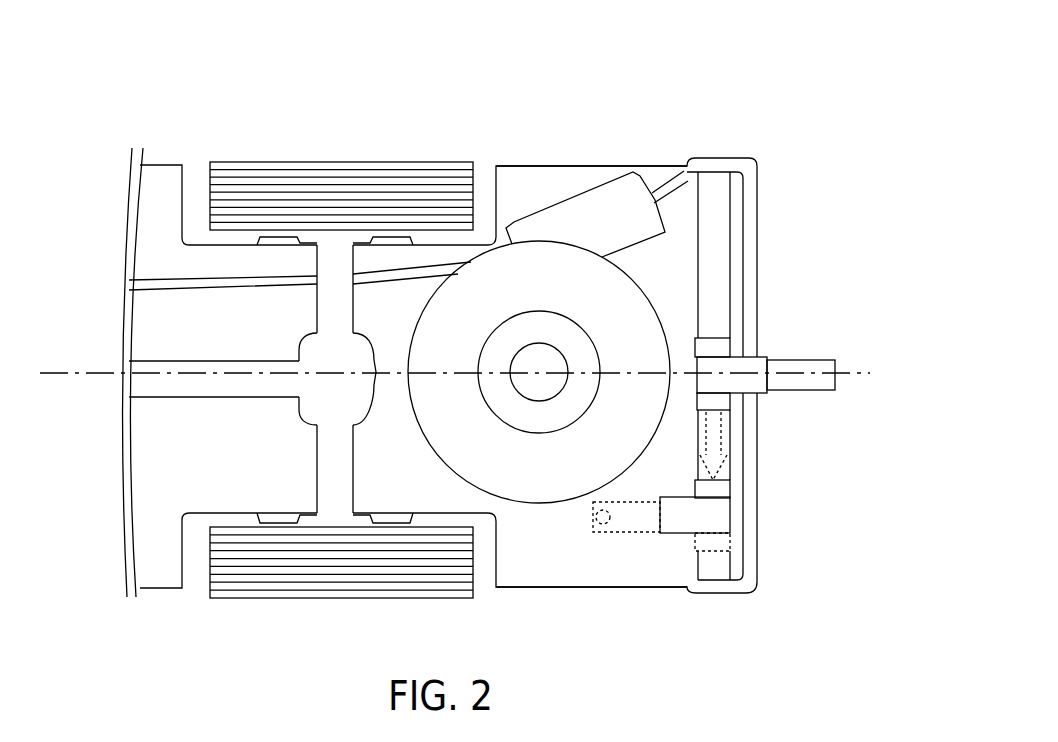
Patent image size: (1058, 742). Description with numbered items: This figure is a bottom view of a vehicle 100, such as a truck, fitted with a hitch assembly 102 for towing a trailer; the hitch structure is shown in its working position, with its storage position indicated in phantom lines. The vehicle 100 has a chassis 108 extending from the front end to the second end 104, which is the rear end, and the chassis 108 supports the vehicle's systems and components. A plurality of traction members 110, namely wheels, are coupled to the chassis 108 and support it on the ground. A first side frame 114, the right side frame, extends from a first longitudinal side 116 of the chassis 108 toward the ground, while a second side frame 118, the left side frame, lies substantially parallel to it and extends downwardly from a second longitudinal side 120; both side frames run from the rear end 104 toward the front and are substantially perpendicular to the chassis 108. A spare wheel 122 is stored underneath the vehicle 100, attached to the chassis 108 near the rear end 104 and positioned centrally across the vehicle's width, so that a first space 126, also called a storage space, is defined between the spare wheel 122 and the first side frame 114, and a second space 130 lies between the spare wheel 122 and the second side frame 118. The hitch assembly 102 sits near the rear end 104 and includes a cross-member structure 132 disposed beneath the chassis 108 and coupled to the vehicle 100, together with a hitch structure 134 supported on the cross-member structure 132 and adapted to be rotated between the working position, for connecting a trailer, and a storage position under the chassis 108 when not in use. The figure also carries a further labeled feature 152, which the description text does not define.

The vehicle 100 is at (720, 84).
The hitch assembly 102 is at (766, 400).
The second end 104 is at (753, 533).
The chassis 108 is at (387, 472).
The traction members 110 is at (293, 162).
The first side frame 114 is at (572, 590).
The first longitudinal side 116 is at (512, 590).
The second side frame 118 is at (527, 166).
The second longitudinal side 120 is at (583, 166).
The spare wheel 122 is at (630, 268).
The first space 126 is at (606, 554).
The second space 130 is at (636, 205).
The cross-member structure 132 is at (742, 302).
The hitch structure 134 is at (814, 398).
The axis 152 is at (83, 370).